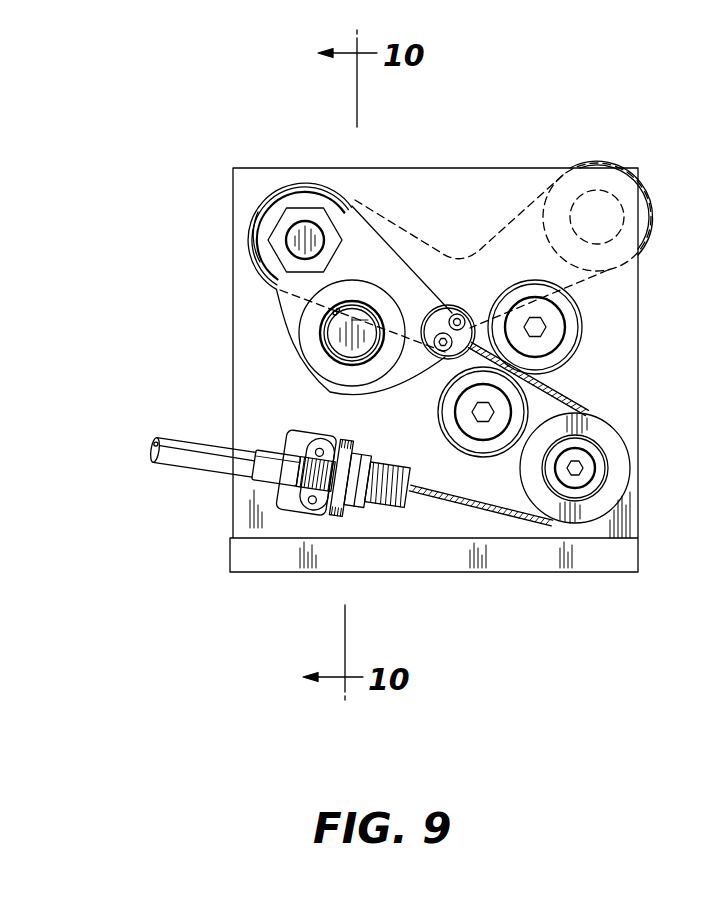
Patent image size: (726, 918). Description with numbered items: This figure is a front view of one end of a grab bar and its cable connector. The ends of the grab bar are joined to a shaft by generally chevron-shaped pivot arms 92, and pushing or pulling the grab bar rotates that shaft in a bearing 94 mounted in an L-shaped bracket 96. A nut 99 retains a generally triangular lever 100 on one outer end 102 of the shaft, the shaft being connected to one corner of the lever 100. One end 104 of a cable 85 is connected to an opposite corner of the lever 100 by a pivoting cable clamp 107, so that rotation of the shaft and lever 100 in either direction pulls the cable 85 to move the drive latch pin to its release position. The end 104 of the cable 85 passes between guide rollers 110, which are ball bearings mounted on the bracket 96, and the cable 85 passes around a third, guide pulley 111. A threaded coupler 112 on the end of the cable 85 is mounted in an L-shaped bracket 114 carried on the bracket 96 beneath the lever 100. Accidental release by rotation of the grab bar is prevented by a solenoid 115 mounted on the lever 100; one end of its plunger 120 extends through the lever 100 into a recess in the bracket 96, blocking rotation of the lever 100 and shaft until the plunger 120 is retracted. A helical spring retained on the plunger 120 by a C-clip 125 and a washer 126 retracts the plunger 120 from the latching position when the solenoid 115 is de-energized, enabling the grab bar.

The cable 85 is at (215, 485).
The pivot arm 92 is at (380, 215).
The bearing 94 is at (270, 193).
The L-shaped bracket 96 is at (639, 573).
The nut 99 is at (303, 212).
The lever 100 is at (270, 312).
The outer end of the shaft 102 is at (290, 225).
The end of the cable 104 is at (586, 412).
The pivoting cable clamp 107 is at (445, 312).
The guide rollers 110 is at (578, 330).
The guide pulley 111 is at (614, 492).
The threaded coupler 112 is at (391, 571).
The L-shaped bracket 114 is at (294, 551).
The solenoid 115 is at (335, 384).
The solenoid plunger 120 is at (358, 318).
The C-clip 125 is at (327, 337).
The washer 126 is at (330, 354).